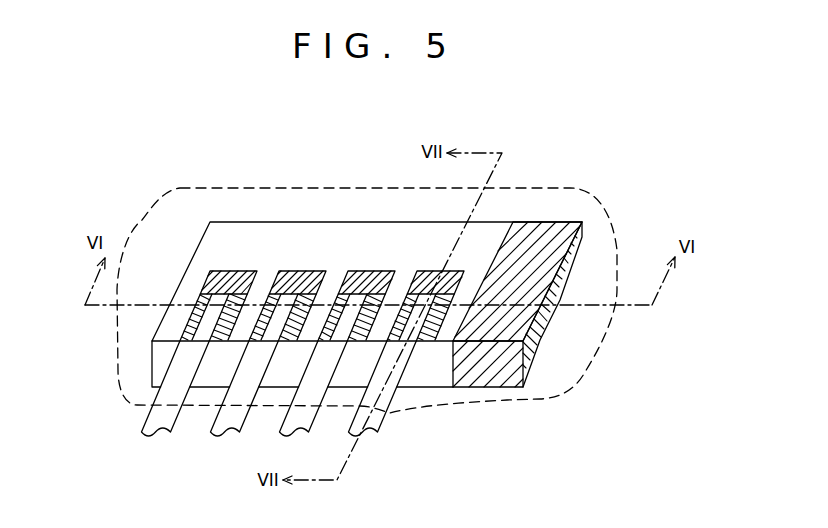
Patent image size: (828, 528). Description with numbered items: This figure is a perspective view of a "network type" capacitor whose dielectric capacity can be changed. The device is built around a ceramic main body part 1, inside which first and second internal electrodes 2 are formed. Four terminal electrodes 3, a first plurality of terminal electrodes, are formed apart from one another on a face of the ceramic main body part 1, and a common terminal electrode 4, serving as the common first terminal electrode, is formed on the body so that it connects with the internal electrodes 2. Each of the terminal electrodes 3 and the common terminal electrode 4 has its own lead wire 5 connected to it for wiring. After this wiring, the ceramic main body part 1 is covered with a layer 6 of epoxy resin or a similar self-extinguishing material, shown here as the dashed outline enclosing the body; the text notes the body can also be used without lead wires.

The ceramic main body part 1 is at (170, 328).
The internal electrodes 2 is at (553, 330).
The terminal electrodes 3 is at (430, 277).
The common terminal electrode 4 is at (542, 230).
The lead wires 5 is at (187, 357).
The layer of epoxy resin 6 is at (202, 190).